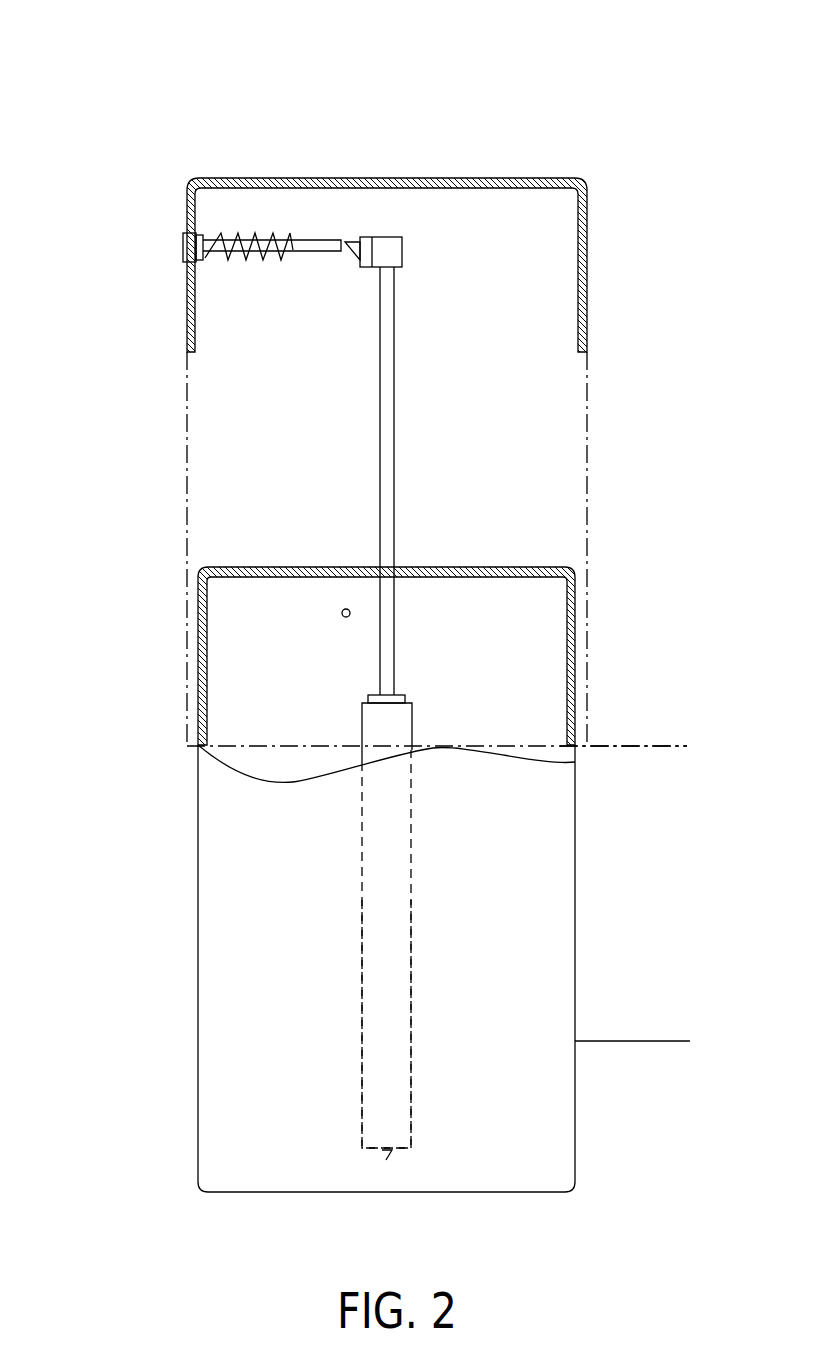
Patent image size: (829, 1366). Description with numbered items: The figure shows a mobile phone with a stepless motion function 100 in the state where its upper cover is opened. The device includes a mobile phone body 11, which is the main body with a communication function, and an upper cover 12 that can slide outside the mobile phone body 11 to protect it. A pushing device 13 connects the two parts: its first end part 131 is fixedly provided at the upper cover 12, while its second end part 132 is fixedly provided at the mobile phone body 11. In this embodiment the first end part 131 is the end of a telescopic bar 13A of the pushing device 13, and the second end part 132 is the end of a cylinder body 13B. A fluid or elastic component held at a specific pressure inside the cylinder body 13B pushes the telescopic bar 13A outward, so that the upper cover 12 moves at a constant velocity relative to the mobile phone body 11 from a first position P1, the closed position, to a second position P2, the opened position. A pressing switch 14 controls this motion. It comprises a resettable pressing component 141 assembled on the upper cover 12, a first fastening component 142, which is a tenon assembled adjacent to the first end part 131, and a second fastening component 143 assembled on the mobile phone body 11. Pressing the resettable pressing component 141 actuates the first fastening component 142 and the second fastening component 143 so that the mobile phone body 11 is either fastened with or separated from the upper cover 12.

The mobile phone with a stepless motion function 100 is at (117, 97).
The mobile phone body 11 is at (576, 1160).
The upper cover 12 is at (586, 262).
The pushing device 13 is at (511, 976).
The telescopic bar 13A is at (388, 668).
The cylinder body 13B is at (390, 948).
The first end part 131 is at (388, 237).
The second end part 132 is at (385, 1163).
The pressing switch 14 is at (245, 198).
The resettable pressing component 141 is at (250, 240).
The first fastening component 142 is at (356, 243).
The second fastening component 143 is at (347, 608).
The first position P1 is at (648, 1040).
The second position P2 is at (642, 746).